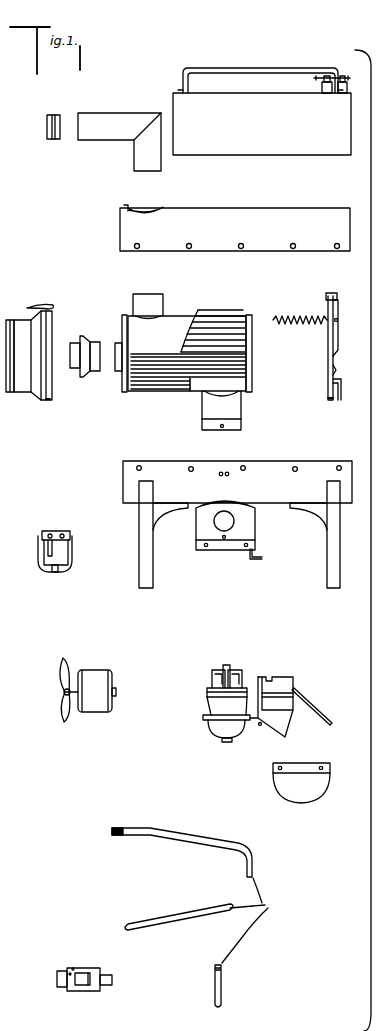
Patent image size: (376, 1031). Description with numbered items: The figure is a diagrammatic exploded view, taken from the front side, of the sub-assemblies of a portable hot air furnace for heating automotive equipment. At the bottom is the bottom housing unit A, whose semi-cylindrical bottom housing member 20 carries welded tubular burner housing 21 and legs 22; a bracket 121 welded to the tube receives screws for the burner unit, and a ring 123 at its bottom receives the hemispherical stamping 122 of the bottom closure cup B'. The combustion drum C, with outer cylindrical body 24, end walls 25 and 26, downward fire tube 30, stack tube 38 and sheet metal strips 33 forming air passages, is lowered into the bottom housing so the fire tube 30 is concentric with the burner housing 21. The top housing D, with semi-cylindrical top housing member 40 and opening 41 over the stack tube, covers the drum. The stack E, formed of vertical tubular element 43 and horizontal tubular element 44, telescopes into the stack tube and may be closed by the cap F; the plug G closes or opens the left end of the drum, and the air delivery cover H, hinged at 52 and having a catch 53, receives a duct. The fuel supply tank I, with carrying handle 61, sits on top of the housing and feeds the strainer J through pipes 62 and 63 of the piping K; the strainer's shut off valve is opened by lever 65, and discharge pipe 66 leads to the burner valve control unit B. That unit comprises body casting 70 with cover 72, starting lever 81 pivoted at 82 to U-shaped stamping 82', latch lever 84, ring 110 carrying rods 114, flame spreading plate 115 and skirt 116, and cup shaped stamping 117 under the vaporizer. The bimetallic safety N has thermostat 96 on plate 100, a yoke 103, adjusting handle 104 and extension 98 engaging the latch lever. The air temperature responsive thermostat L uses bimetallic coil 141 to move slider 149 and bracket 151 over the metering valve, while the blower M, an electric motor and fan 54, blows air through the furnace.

The fuel supply tank I is at (277, 143).
The handle 61 is at (254, 70).
The stack E is at (114, 119).
The horizontal tubular element 44 is at (86, 118).
The vertical tubular element 43 is at (143, 152).
The cap F is at (47, 124).
The top housing D is at (270, 213).
The top housing member 40 is at (208, 212).
The opening 41 is at (150, 207).
The air delivery cover H is at (15, 322).
The catch 53 is at (50, 305).
The hinge 52 is at (48, 401).
The plug G is at (81, 340).
The combustion drum C is at (183, 320).
The outer cylindrical body 24 is at (163, 328).
The end wall 25 is at (128, 378).
The stack tube 38 is at (140, 293).
The sheet metal strips 33 is at (215, 326).
The end wall 26 is at (252, 323).
The fire tube 30 is at (240, 418).
The bimetallic coiled thermostat 141 is at (297, 316).
The air temperature responsive thermostat L is at (332, 295).
The bracket member 151 is at (342, 387).
The slider 149 is at (330, 400).
The bottom housing unit A is at (127, 476).
The bottom housing member 20 is at (259, 473).
The legs 22 is at (147, 588).
The tubular burner housing 21 is at (250, 525).
The ring 123 is at (236, 548).
The bracket 121 is at (264, 558).
The strainer J is at (53, 532).
The lever 65 is at (48, 548).
The blower M is at (96, 670).
The electric motor and fan 54 is at (100, 676).
The burner valve control unit B is at (205, 710).
The rods 114 is at (227, 668).
The flame spreading plate 115 is at (213, 680).
The ring 110 is at (207, 692).
The skirt 116 is at (207, 712).
The cup shaped stamping 117 is at (216, 730).
The body casting 70 is at (273, 727).
The cover 72 is at (278, 696).
The latch lever 84 is at (262, 680).
The U-shaped stamping 82' is at (295, 670).
The pivot 82 is at (293, 689).
The starting lever 81 is at (325, 720).
The bottom closure cup B' is at (312, 754).
The hemispherical stamping 122 is at (310, 796).
The pipe 62 is at (178, 836).
The discharge pipe 66 is at (166, 918).
The pipes K is at (254, 920).
The pipe 63 is at (222, 992).
The bimetallic safety N is at (88, 967).
The plate 100 is at (85, 992).
The extension 98 is at (112, 977).
The thermostat 96 is at (57, 979).
The yoke 103 is at (68, 971).
The handle 104 is at (73, 967).